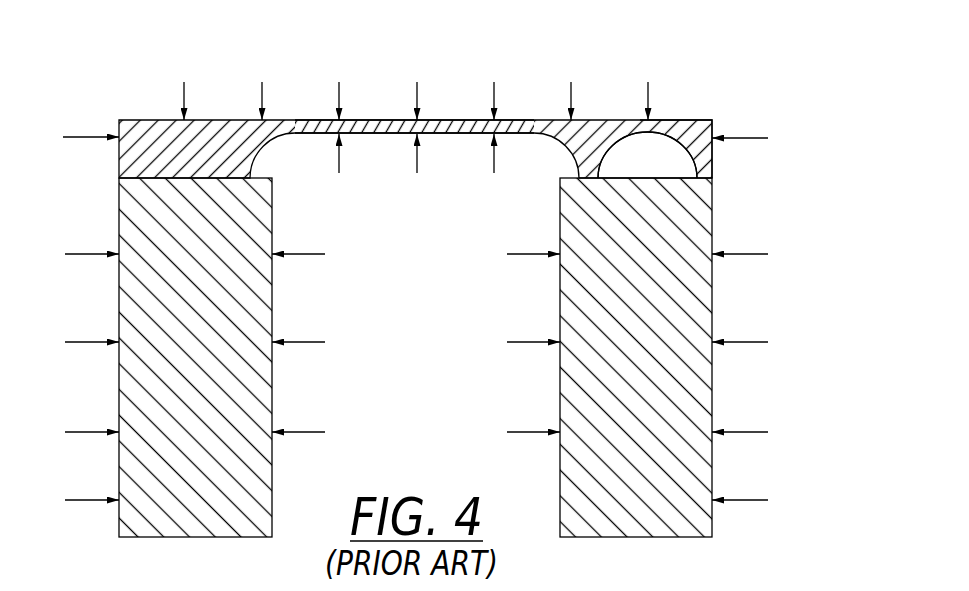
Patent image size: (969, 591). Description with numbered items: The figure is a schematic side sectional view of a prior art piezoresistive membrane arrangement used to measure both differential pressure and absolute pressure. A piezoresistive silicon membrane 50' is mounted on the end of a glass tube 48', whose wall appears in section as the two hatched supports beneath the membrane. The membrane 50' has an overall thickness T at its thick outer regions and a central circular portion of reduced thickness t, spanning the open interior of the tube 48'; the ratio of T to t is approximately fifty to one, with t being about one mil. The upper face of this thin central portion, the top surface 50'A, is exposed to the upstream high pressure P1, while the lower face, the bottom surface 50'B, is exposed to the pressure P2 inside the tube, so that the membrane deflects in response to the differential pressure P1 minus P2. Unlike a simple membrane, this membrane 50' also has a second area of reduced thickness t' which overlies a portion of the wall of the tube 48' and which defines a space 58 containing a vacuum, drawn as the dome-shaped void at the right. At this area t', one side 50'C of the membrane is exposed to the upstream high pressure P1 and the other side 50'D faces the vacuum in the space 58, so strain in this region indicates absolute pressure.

The glass tube 48' is at (467, 357).
The piezoresistive silicon membrane 50' is at (415, 101).
The top surface of diaphragm 50'A is at (414, 73).
The bottom surface of diaphragm 50'B is at (414, 188).
The one side of the membrane at area t' 50'C is at (716, 118).
The other side of the membrane at area t' 50'D is at (711, 165).
The space 58 is at (662, 165).
The overall thickness T is at (31, 134).
The reduced thickness t is at (365, 71).
The second area of reduced thickness t' is at (681, 74).
The upstream high pressure P1 is at (435, 35).
The downstream pressure P2 is at (436, 363).